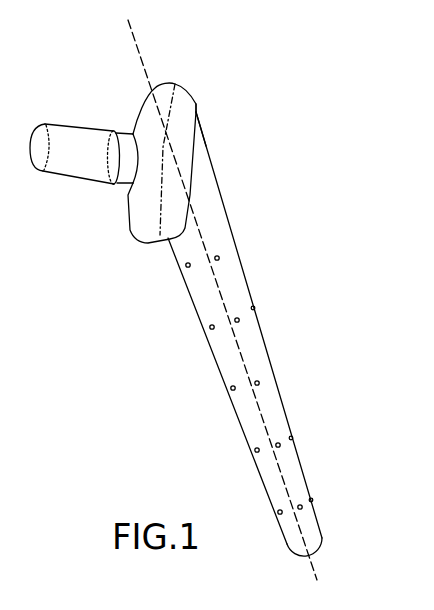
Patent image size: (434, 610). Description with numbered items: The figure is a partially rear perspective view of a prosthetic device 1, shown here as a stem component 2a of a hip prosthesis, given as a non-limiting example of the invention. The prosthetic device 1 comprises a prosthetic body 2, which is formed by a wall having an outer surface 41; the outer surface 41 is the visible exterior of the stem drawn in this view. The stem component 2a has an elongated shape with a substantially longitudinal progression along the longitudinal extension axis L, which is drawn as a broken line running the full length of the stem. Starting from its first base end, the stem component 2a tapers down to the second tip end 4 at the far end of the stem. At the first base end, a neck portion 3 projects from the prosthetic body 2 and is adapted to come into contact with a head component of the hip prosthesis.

The prosthetic device 1 is at (286, 306).
The prosthetic body 2 is at (221, 202).
The stem component 2a is at (199, 323).
The neck portion 3 is at (76, 180).
The second tip end 4 is at (313, 562).
The outer surface 41 is at (209, 138).
The longitudinal extension axis L is at (142, 52).